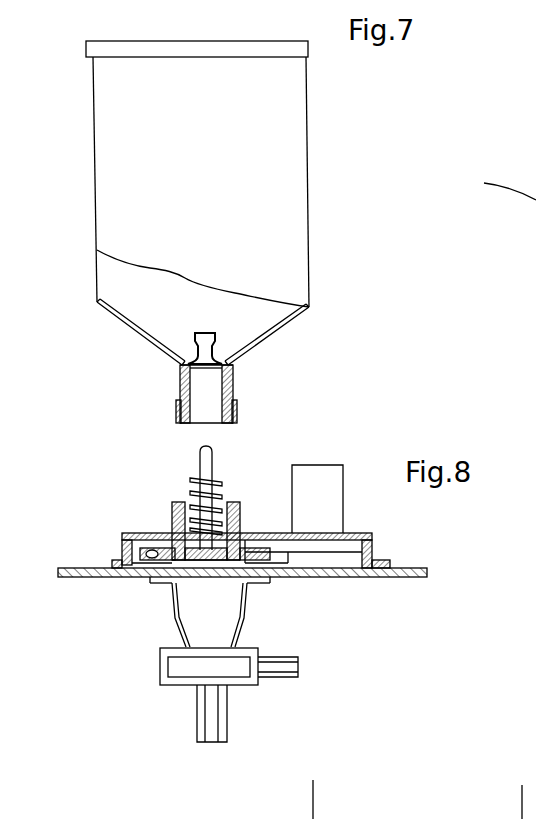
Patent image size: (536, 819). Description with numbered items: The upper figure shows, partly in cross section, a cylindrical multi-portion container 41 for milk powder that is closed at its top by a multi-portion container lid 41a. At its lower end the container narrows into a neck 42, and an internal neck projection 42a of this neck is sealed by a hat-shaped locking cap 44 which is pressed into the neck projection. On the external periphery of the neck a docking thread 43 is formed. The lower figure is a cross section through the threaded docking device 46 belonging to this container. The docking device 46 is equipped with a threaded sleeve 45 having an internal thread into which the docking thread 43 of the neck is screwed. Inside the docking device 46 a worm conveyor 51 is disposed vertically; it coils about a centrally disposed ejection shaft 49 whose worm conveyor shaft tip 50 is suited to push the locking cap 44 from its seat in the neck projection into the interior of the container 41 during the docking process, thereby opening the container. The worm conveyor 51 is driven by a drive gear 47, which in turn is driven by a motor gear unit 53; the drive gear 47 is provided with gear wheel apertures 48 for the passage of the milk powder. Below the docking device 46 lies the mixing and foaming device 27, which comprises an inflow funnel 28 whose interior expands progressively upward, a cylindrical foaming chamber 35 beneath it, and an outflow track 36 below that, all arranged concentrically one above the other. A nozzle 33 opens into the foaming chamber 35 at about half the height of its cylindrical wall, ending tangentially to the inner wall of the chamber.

In FIG. 7, the multi-portion container 41 is at (277, 208).
In FIG. 7, the multi-portion container lid 41a is at (138, 47).
In FIG. 7, the neck 42 is at (180, 382).
In FIG. 7, the internal neck projection 42a is at (182, 365).
In FIG. 7, the docking thread 43 is at (236, 410).
In FIG. 7, the locking cap 44 is at (214, 345).
In FIG. 8, the threaded sleeve 45 is at (177, 518).
In FIG. 8, the docking device 46 is at (130, 543).
In FIG. 8, the drive gear 47 is at (158, 553).
In FIG. 8, the gear wheel apertures 48 is at (227, 555).
In FIG. 8, the ejection shaft 49 is at (200, 468).
In FIG. 8, the worm conveyor shaft tip 50 is at (201, 450).
In FIG. 8, the worm conveyor 51 is at (200, 497).
In FIG. 8, the motor gear unit 53 is at (323, 492).
In FIG. 8, the mixing and foaming device 27 is at (267, 618).
In FIG. 8, the inflow funnel 28 is at (217, 589).
In FIG. 8, the nozzle 33 is at (262, 672).
In FIG. 8, the foaming chamber 35 is at (203, 668).
In FIG. 8, the outflow track 36 is at (220, 718).